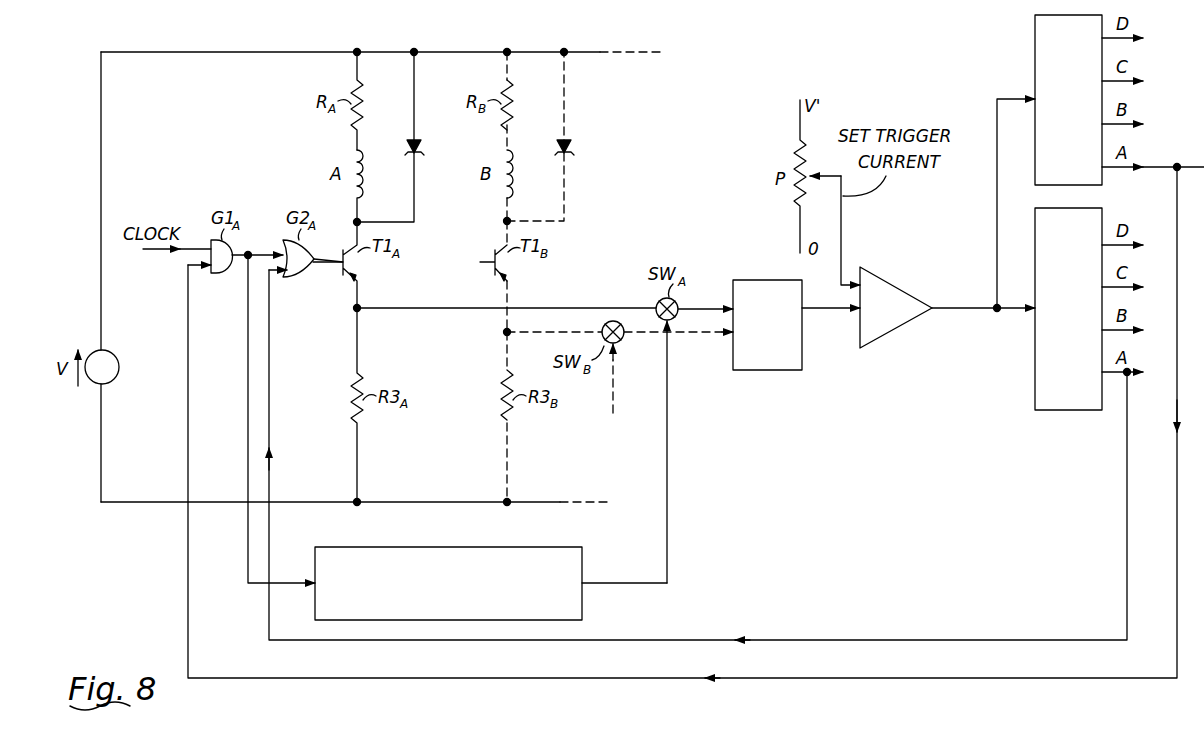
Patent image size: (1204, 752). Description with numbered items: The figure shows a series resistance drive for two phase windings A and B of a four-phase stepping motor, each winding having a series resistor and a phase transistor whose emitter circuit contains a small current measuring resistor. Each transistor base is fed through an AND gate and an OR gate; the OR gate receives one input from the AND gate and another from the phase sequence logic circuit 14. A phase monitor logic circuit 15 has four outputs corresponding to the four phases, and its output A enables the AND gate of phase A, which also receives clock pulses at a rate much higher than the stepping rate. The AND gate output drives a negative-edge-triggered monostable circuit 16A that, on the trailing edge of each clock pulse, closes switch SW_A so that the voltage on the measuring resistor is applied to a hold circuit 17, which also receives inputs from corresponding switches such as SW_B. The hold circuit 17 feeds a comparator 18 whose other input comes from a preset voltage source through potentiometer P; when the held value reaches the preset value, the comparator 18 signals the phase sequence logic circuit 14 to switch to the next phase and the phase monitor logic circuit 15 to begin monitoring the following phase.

The phase sequence logic circuit 14 is at (1035, 376).
The phase monitor logic circuit 15 is at (1035, 40).
The negative-edge-triggered monostable circuit 16A is at (558, 547).
The hold circuit 17 is at (756, 280).
The comparator 18 is at (898, 276).